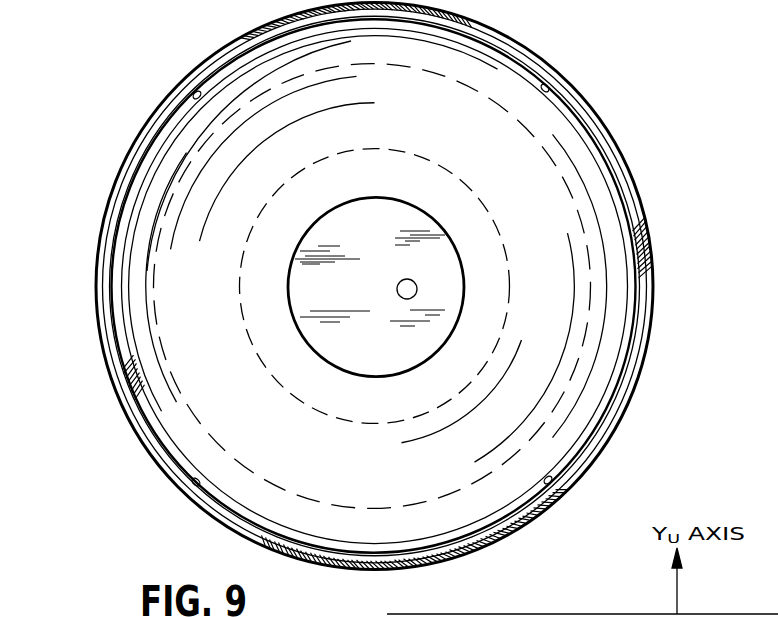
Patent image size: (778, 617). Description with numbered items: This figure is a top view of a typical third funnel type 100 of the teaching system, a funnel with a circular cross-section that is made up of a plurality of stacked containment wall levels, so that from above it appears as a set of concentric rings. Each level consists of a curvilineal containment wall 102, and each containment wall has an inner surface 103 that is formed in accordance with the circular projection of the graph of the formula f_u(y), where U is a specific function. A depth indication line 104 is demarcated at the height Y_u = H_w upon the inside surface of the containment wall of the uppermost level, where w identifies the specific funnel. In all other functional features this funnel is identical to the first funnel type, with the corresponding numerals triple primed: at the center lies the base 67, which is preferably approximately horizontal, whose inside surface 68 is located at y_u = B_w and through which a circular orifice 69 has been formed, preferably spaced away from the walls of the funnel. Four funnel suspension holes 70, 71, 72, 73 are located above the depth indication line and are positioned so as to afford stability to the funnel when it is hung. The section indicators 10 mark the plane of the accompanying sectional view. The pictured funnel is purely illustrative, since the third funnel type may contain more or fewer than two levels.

The third funnel type 100 is at (481, 21).
The curvilineal containment wall 102 is at (635, 205).
The inner surface 103 is at (590, 174).
The depth indication line 104 is at (415, 42).
The inside surface of the base 68 is at (370, 250).
The circular orifice 69 is at (400, 297).
The funnel suspension hole 70 is at (192, 92).
The funnel suspension hole 71 is at (551, 86).
The funnel suspension hole 72 is at (192, 486).
The funnel suspension hole 73 is at (554, 480).
The section line indicator 10 is at (62, 297).
The base 67 is at (732, 14).